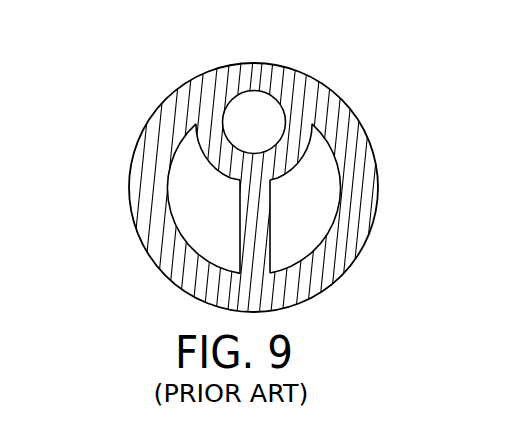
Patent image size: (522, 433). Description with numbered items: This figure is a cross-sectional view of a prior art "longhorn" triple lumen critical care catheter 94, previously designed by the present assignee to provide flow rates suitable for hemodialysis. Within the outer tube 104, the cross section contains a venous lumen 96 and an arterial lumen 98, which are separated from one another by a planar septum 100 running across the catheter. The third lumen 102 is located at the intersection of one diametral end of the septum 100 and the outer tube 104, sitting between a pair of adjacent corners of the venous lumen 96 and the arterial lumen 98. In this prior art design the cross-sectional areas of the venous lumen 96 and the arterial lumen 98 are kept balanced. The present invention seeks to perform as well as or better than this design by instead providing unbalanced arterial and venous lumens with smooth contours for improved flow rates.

The triple lumen critical care catheter 94 is at (173, 82).
The venous lumen 96 is at (186, 181).
The arterial lumen 98 is at (312, 210).
The planar septum 100 is at (247, 240).
The third lumen 102 is at (262, 88).
The outer tube 104 is at (162, 223).